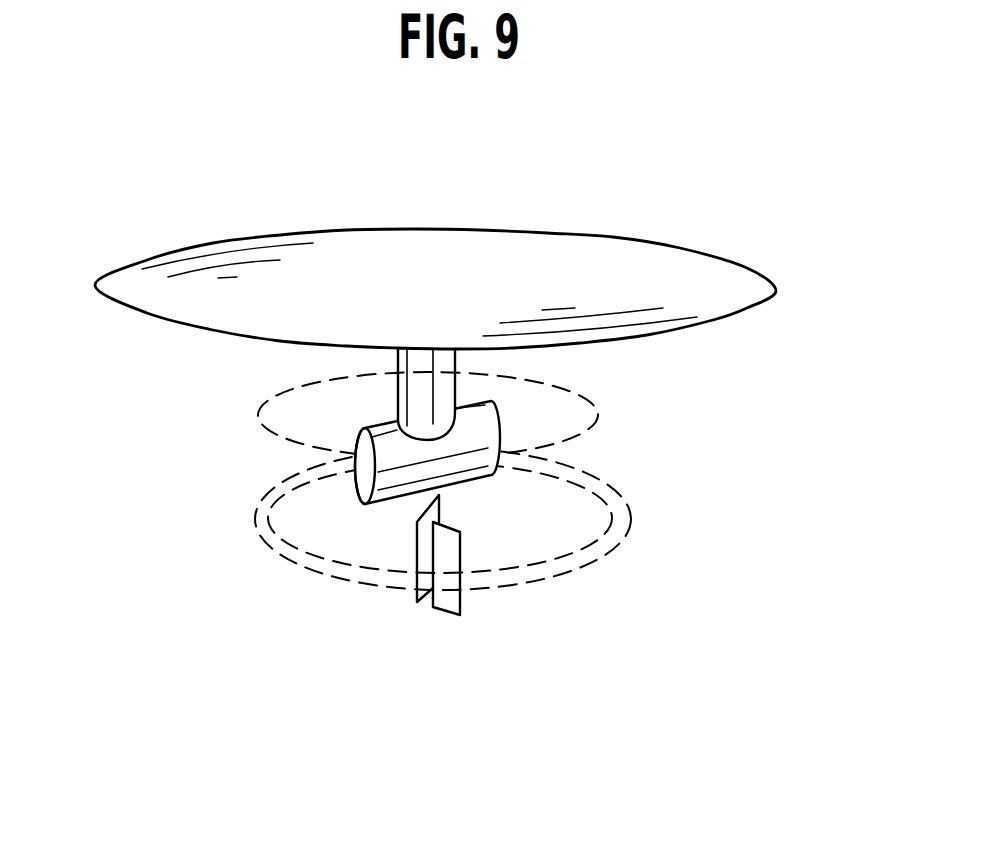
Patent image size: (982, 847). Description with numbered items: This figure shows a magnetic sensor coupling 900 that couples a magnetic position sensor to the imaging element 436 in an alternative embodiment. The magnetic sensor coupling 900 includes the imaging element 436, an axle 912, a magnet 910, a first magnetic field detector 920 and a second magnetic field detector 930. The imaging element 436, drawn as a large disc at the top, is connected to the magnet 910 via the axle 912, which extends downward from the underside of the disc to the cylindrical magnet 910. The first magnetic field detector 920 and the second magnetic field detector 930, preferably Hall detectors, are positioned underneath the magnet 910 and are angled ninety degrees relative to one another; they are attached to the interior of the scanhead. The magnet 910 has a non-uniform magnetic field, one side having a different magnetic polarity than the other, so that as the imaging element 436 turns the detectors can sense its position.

The magnetic sensor coupling 900 is at (218, 632).
The imaging element 436 is at (783, 244).
The axle 912 is at (457, 358).
The magnet 910 is at (497, 440).
The first magnetic field detector 920 is at (422, 600).
The second magnetic field detector 930 is at (458, 602).